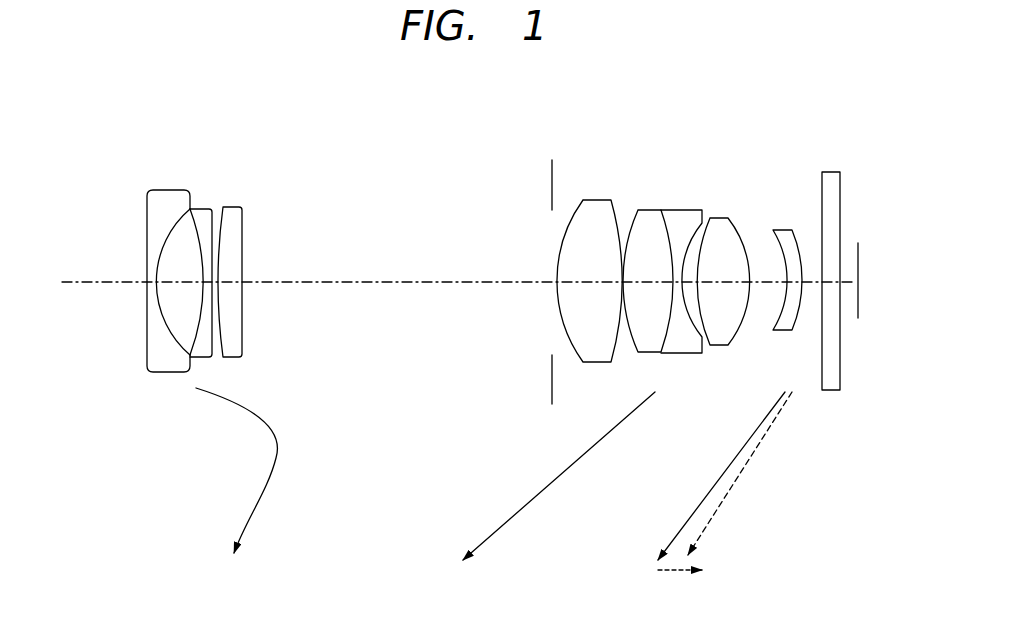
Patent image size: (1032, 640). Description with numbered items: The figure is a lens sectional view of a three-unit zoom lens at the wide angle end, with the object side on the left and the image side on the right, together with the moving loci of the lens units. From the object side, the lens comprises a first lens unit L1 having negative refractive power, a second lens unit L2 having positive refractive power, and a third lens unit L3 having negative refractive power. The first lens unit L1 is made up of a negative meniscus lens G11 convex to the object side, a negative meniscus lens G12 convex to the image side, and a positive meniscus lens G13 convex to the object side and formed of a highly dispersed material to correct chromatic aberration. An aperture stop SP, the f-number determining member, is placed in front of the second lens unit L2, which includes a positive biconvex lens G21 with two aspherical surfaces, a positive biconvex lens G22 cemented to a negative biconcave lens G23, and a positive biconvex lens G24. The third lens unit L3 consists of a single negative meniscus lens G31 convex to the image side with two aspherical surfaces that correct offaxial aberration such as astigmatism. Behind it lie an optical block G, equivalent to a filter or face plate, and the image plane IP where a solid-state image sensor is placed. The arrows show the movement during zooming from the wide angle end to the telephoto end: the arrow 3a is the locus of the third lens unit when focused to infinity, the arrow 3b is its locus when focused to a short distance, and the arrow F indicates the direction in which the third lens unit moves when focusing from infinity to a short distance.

The first lens unit L1 is at (248, 377).
The second lens unit L2 is at (740, 373).
The third lens unit L3 is at (805, 370).
The negative meniscus lens G11 is at (166, 203).
The negative meniscus lens G12 is at (201, 209).
The positive meniscus lens G13 is at (232, 207).
The positive biconvex lens G21 is at (597, 200).
The positive biconvex lens G22 is at (650, 210).
The negative biconcave lens G23 is at (681, 210).
The positive biconvex lens G24 is at (722, 218).
The negative meniscus lens G31 is at (778, 230).
The aperture stop SP is at (550, 166).
The optical block G is at (840, 108).
The image plane IP is at (857, 243).
The arrow 3a is at (703, 500).
The arrow 3b is at (733, 487).
The arrow F is at (689, 573).